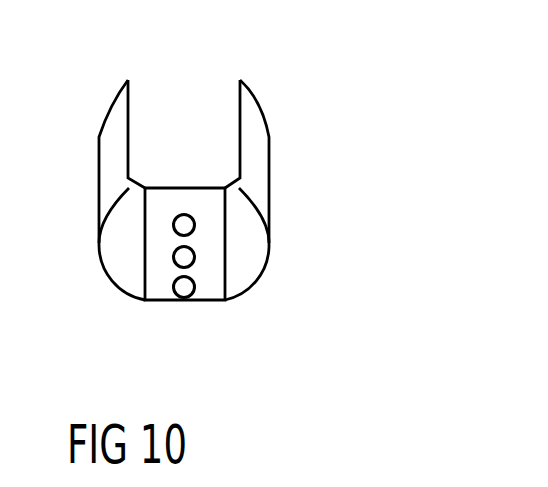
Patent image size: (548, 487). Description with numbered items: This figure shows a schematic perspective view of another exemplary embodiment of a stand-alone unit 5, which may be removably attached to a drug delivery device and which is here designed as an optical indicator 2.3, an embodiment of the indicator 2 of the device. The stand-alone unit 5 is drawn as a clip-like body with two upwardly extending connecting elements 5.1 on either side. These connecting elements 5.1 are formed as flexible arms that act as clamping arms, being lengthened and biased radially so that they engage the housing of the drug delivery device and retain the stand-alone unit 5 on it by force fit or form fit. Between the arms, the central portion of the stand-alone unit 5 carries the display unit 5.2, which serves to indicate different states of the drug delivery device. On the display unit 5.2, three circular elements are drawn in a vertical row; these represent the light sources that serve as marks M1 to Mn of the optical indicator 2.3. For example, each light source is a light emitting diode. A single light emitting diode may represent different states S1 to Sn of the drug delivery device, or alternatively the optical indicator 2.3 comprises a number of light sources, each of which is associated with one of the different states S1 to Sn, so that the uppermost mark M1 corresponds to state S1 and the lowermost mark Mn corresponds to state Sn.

The stand-alone unit 5 is at (194, 165).
The connecting elements 5.1 is at (113, 137).
The display unit 5.2 is at (162, 198).
The indicator 2 is at (121, 338).
The optical indicator 2.3 is at (156, 288).
The first mark M1 is at (221, 136).
The first state S1 is at (185, 212).
The nth mark Mn is at (238, 337).
The nth state Sn is at (193, 296).